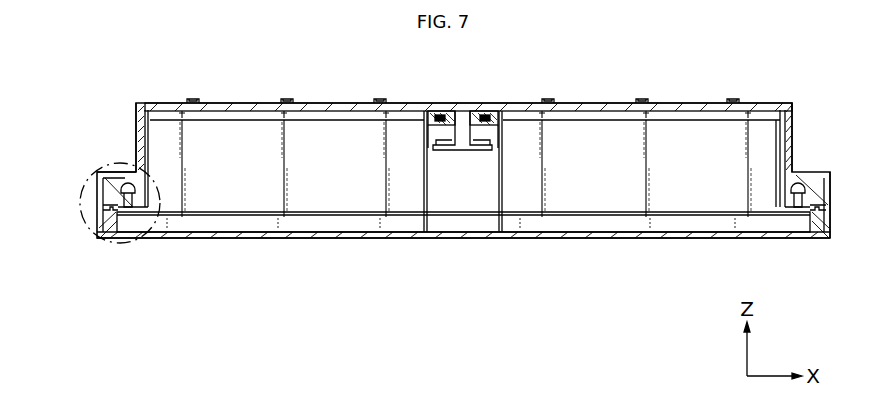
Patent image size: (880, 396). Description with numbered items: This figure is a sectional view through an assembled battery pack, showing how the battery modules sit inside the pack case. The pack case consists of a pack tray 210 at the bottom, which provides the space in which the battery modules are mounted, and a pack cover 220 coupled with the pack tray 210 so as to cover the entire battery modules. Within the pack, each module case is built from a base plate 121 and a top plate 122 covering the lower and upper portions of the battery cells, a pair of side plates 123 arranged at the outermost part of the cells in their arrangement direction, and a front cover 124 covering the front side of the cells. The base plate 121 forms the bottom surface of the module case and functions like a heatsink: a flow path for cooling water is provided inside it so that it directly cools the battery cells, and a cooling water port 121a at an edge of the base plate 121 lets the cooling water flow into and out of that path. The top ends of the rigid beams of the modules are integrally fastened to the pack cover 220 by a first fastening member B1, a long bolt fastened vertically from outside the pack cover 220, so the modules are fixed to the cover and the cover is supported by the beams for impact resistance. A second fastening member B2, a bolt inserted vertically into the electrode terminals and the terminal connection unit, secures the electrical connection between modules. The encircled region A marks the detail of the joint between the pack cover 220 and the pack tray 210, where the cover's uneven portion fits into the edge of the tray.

The top plate 122 is at (234, 116).
The first fastening member B1 is at (287, 102).
The pack cover 220 is at (465, 105).
The second fastening member B2 is at (436, 153).
The front cover 124 is at (430, 203).
The base plate 121 is at (345, 224).
The pack tray 210 is at (461, 239).
The side plate 123 is at (765, 138).
The cooling water port 121a is at (800, 185).
The detail region A is at (82, 203).